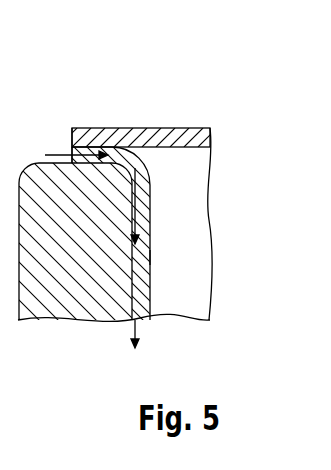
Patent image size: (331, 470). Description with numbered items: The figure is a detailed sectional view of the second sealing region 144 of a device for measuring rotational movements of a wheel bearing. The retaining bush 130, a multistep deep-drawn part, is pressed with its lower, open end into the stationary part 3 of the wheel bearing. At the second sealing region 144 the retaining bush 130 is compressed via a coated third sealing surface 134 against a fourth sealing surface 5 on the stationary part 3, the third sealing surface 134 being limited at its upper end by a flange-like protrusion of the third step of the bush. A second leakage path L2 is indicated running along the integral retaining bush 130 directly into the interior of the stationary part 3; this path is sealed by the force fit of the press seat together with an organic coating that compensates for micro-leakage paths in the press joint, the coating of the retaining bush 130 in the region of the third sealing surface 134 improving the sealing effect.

The stationary part of the wheel bearing 3 is at (56, 296).
The third sealing surface 134 is at (138, 284).
The retaining bush 130 is at (183, 128).
The second sealing region 144 is at (56, 99).
The second leakage path L2 is at (73, 157).
The fourth sealing surface 5 is at (150, 257).